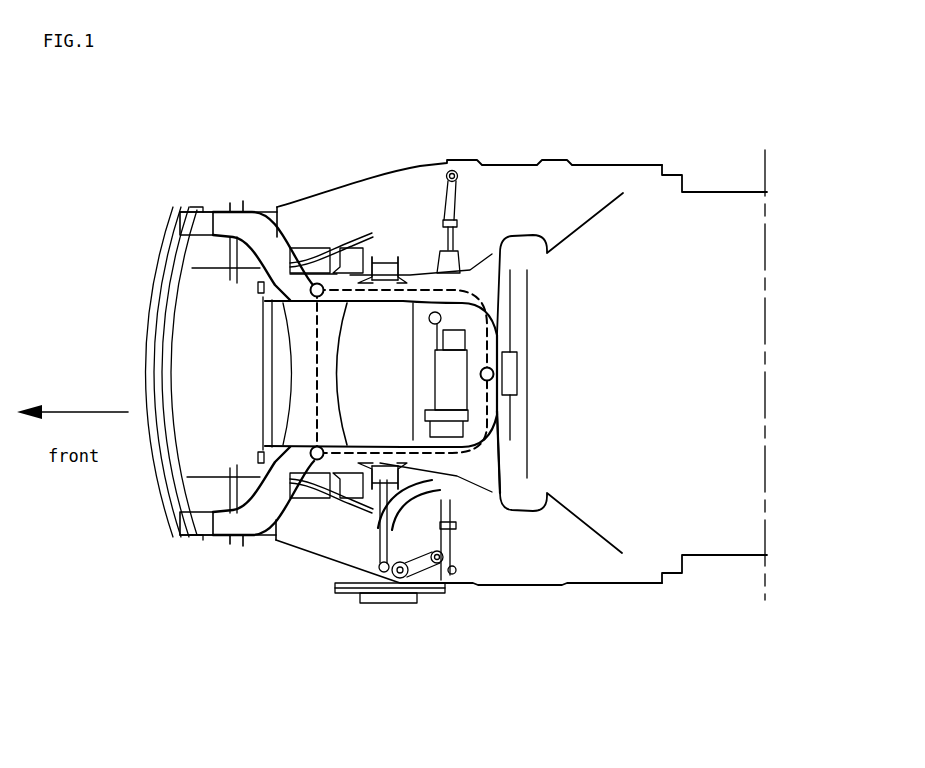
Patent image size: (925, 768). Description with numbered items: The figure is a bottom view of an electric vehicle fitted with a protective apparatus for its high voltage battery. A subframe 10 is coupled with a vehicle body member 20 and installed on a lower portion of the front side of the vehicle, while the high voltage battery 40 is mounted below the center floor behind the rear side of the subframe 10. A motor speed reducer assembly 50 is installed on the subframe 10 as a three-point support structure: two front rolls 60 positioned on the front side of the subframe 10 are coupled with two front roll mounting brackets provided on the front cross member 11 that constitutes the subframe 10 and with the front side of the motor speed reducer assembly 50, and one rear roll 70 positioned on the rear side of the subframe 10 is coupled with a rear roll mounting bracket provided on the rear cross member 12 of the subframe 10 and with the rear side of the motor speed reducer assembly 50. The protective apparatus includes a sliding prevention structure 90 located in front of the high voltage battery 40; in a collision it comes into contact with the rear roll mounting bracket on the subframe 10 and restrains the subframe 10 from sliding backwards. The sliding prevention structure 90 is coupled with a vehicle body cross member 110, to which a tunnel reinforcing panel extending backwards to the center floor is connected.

The subframe 10 is at (267, 518).
The front cross member 11 is at (307, 375).
The rear cross member 12 is at (490, 328).
The vehicle body member 20 is at (383, 200).
The high voltage battery 40 is at (737, 420).
The motor speed reducer assembly 50 is at (297, 342).
The front roll 60 is at (311, 284).
The rear roll 70 is at (495, 374).
The sliding prevention structure 90 is at (508, 362).
The vehicle body cross member 110 is at (520, 452).